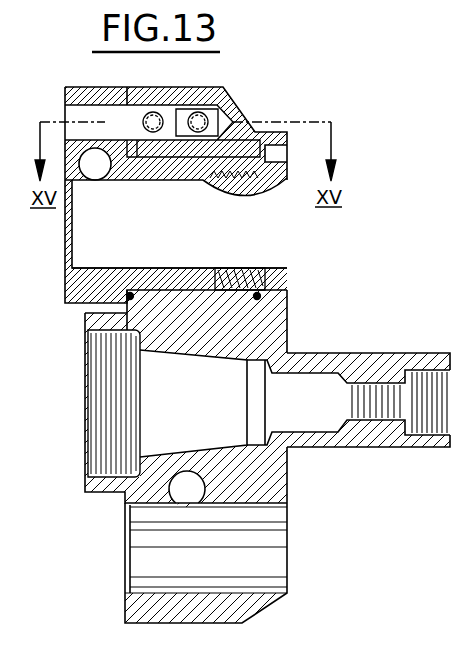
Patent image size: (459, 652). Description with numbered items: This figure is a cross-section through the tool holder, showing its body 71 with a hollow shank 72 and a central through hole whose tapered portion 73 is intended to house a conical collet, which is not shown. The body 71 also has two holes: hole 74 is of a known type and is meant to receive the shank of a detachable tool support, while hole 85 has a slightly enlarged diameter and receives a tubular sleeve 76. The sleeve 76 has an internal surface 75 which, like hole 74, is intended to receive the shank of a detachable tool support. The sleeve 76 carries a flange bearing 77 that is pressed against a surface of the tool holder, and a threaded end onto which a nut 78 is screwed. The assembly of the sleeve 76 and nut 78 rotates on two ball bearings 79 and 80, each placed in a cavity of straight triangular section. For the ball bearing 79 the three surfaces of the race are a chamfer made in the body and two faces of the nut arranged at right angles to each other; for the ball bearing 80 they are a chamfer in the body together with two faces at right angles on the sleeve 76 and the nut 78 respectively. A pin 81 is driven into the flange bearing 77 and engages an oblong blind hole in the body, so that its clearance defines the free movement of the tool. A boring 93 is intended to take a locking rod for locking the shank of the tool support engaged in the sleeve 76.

The body of the tool holder 71 is at (270, 462).
The hollow shank 72 is at (383, 437).
The tapered portion 73 is at (193, 447).
The hole 74 is at (240, 620).
The internal surface 75 is at (83, 249).
The tubular sleeve 76 is at (262, 178).
The flange bearing 77 is at (78, 92).
The nut 78 is at (276, 272).
The ball bearing 79 is at (127, 295).
The ball bearing 80 is at (258, 298).
The pin 81 is at (72, 118).
The hole 85 is at (172, 262).
The boring 93 is at (90, 166).